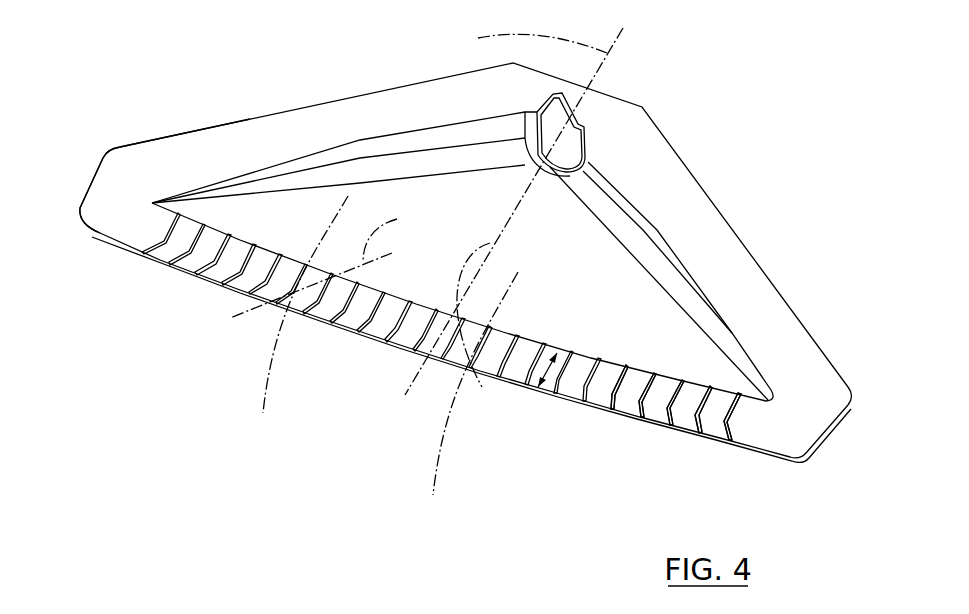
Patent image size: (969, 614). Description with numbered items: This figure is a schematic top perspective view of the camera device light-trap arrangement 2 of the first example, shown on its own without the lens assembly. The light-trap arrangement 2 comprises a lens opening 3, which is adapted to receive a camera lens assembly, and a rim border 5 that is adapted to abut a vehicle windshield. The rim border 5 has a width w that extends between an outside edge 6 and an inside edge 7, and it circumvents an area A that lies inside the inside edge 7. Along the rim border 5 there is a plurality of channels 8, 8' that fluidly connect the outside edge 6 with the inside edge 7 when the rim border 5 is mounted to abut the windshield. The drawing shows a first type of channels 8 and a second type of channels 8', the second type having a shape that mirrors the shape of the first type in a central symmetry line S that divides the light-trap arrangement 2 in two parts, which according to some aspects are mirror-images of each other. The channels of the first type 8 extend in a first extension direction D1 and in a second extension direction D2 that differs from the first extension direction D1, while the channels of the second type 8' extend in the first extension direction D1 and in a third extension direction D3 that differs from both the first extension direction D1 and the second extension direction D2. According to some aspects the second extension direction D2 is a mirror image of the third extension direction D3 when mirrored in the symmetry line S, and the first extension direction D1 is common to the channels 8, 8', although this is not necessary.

The light trap arrangement 2 is at (338, 66).
The lens opening 3 is at (569, 150).
The rim border 5 is at (138, 187).
The outside edge 6 is at (230, 292).
The inside edge 7 is at (245, 242).
The channels 8 is at (441, 342).
The channels 8' is at (673, 456).
The area A is at (616, 276).
The central symmetry line S is at (514, 209).
The first extension direction D1 is at (375, 366).
The second extension direction D2 is at (338, 260).
The third extension direction D3 is at (503, 305).
The width w is at (548, 370).